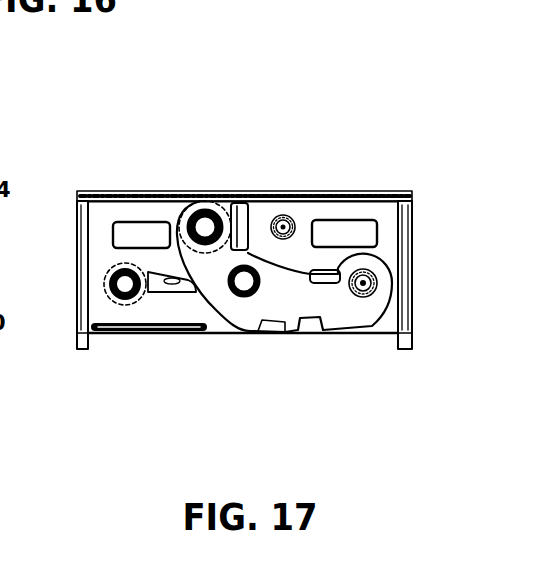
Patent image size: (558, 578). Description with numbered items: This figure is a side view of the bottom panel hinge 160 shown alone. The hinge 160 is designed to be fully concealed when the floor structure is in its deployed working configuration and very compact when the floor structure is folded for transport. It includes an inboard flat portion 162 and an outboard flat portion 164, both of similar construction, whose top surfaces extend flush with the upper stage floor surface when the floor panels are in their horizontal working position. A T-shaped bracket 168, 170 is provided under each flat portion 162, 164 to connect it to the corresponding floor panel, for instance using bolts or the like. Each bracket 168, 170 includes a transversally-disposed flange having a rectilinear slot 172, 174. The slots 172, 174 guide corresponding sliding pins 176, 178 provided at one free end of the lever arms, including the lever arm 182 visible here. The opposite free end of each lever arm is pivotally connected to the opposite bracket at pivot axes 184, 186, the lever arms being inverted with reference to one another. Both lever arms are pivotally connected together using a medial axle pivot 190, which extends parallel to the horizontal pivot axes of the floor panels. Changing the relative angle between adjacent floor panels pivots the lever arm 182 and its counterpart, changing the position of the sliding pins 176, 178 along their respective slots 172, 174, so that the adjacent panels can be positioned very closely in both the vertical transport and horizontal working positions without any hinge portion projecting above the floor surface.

The bottom panel hinge 160 is at (318, 107).
The inboard flat portion 162 is at (150, 192).
The outboard flat portion 164 is at (378, 191).
The T-shaped bracket 168 is at (80, 255).
The T-shaped bracket 170 is at (413, 241).
The rectilinear slot 172 is at (173, 297).
The rectilinear slot 174 is at (330, 270).
The sliding pin 176 is at (108, 287).
The sliding pin 178 is at (363, 285).
The lever arm 182 is at (320, 303).
The pivot axis 184 is at (286, 215).
The pivot axis 186 is at (217, 203).
The medial axle pivot 190 is at (244, 288).